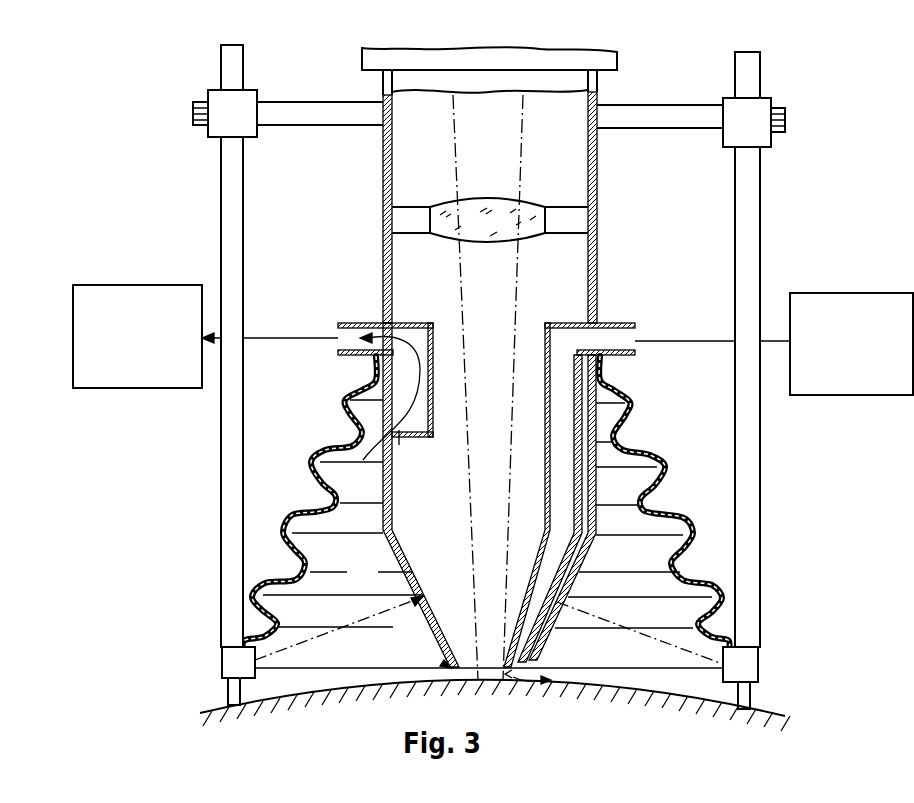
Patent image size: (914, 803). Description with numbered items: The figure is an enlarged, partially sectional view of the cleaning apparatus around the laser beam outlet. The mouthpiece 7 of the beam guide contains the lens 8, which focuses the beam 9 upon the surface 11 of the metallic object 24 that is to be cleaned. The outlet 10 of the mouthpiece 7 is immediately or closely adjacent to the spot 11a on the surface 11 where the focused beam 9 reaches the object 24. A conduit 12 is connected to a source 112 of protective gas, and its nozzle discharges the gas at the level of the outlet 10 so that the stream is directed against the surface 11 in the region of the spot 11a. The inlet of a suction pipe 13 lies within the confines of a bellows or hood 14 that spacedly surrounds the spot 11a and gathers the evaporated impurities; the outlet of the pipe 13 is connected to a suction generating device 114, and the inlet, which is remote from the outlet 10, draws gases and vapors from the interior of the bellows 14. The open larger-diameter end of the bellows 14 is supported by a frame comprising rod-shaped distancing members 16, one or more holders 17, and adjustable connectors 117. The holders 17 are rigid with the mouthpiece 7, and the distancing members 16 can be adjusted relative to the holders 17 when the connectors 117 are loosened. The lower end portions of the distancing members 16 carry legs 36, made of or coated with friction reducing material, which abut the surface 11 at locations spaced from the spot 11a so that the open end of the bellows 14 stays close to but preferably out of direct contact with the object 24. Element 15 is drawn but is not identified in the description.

The mouthpiece 7 is at (553, 132).
The lens 8 is at (527, 210).
The beam 9 is at (505, 270).
The outlet 10 is at (458, 645).
The surface 11 is at (403, 686).
The spot 11a is at (490, 684).
The conduit 12 is at (577, 345).
The suction pipe 13 is at (398, 445).
The bellows 14 is at (345, 452).
The sight line 15 is at (355, 618).
The distancing members 16 is at (238, 228).
The holder 17 is at (652, 120).
The adjustable connectors 117 is at (240, 107).
The metallic object 24 is at (650, 705).
The legs 36 is at (222, 690).
The source of protective gas 112 is at (860, 395).
The suction generating device 114 is at (140, 388).